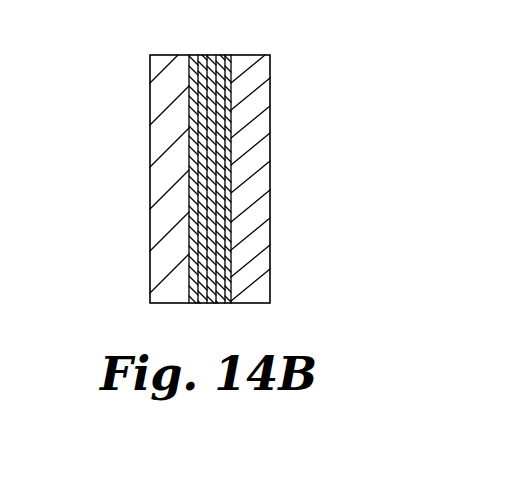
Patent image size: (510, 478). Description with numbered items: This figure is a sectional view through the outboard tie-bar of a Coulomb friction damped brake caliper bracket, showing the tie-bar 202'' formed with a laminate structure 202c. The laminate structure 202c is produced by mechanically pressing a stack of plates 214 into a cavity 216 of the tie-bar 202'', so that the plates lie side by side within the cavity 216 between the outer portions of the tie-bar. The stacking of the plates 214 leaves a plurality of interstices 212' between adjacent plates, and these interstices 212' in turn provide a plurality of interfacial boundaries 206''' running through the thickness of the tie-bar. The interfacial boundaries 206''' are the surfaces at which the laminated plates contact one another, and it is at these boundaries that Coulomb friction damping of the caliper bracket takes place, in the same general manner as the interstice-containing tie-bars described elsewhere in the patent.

The outboard tie-bar 202'' is at (194, 179).
The laminate structure 202c is at (233, 223).
The stack of plates 214 is at (226, 127).
The interfacial boundaries 206''' is at (136, 169).
The interstices 212' is at (139, 252).
The cavity 216 is at (240, 171).